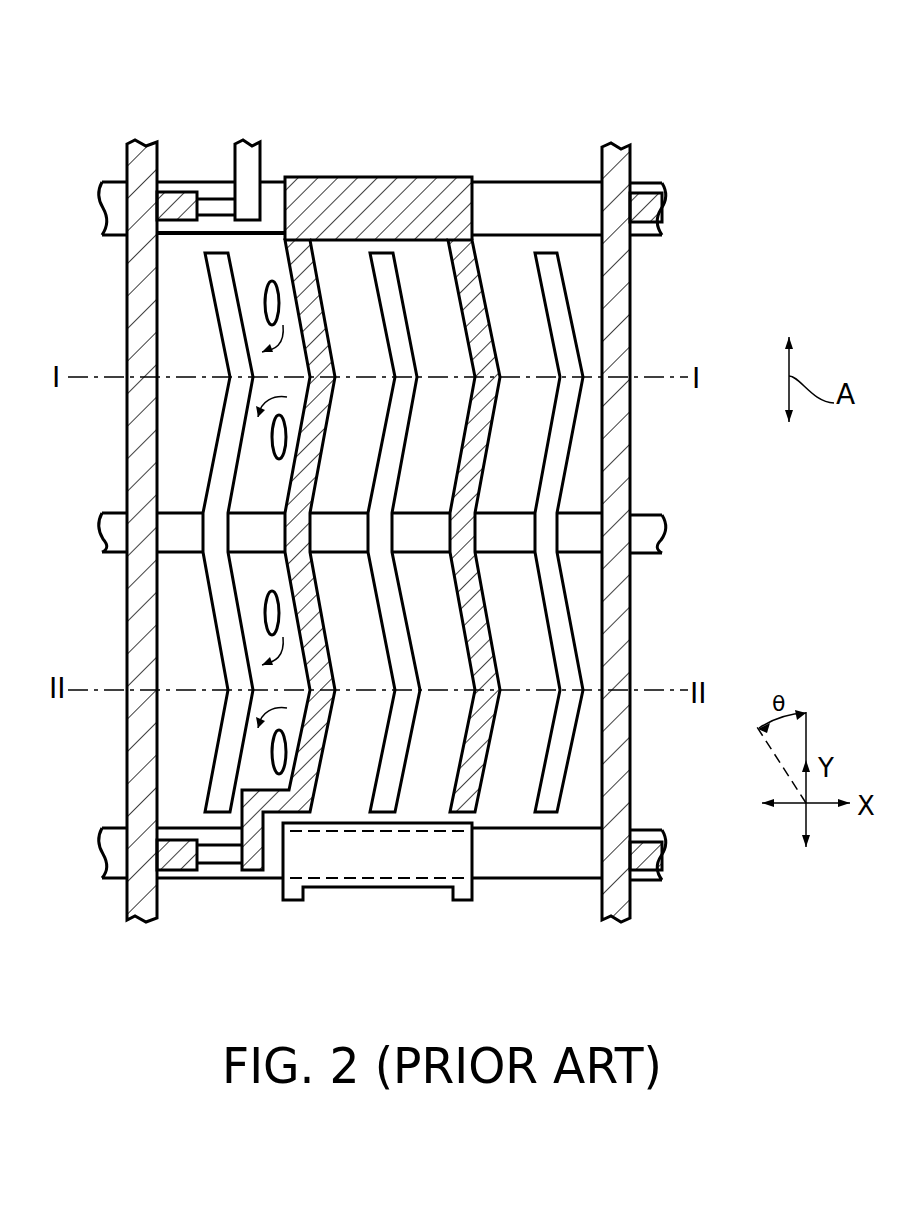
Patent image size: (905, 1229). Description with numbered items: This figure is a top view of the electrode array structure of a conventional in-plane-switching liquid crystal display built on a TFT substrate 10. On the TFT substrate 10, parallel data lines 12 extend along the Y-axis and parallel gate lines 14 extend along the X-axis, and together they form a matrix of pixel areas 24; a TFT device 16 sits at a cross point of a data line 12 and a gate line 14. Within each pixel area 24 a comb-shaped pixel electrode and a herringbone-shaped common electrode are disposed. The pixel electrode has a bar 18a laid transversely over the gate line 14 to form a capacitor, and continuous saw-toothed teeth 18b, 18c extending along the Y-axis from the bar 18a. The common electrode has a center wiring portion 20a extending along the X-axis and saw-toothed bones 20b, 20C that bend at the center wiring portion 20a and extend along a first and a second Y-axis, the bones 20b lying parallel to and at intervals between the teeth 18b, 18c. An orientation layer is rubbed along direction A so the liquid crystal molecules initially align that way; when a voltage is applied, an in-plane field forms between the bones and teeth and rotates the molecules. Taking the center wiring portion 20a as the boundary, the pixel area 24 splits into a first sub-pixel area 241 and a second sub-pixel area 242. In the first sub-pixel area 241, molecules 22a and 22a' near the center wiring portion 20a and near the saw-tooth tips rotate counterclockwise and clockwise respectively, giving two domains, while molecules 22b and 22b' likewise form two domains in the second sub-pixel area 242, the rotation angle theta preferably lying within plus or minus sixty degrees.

The TFT substrate 10 is at (693, 123).
The data line 12 is at (140, 922).
The gate line 14 is at (505, 184).
The TFT device 16 is at (218, 876).
The bar 18a is at (385, 177).
The saw-toothed tooth 18b is at (290, 267).
The saw-toothed tooth 18c is at (473, 270).
The center wiring portion 20a is at (583, 523).
The saw-toothed bone 20b is at (548, 262).
The saw-toothed bone 20C is at (545, 805).
The liquid crystal molecule 22a is at (164, 441).
The liquid crystal molecule 22a' is at (157, 316).
The liquid crystal molecule 22b is at (159, 617).
The liquid crystal molecule 22b' is at (161, 741).
The pixel area 24 is at (595, 285).
The first sub-pixel area 241 is at (290, 380).
The second sub-pixel area 242 is at (290, 700).